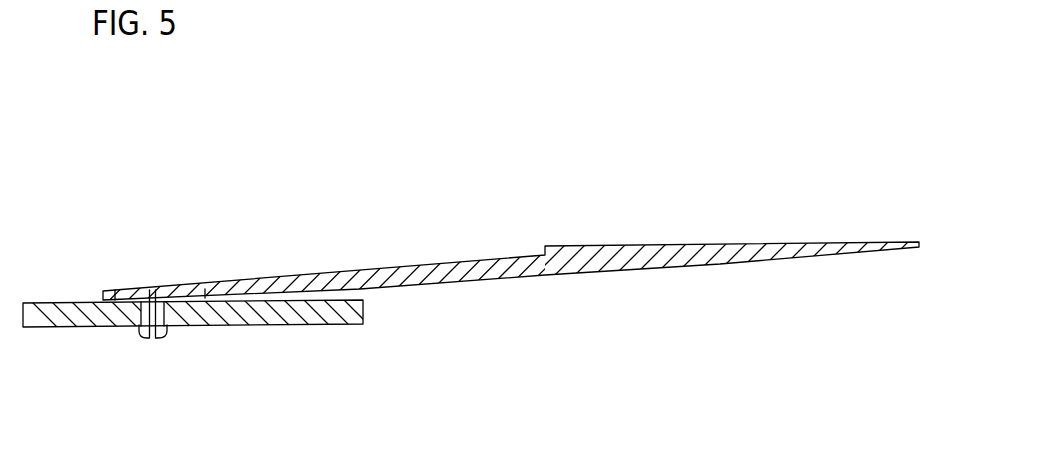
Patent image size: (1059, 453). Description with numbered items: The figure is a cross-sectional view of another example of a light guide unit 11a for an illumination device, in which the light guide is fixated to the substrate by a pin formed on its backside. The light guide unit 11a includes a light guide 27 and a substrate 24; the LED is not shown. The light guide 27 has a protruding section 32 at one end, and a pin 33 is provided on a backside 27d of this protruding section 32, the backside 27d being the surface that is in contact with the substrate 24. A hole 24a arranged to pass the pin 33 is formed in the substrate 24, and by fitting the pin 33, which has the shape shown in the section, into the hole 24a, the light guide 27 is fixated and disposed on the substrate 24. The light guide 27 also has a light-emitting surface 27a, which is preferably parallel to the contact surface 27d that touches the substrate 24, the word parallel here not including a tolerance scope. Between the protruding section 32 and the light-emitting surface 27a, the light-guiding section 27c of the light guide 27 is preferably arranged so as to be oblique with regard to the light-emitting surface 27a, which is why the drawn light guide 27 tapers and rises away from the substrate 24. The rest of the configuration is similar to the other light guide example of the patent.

The light guide unit 11a is at (793, 87).
The light guide 27 is at (582, 290).
The light-emitting surface 27a is at (847, 242).
The light-guiding section 27c is at (363, 268).
The backside 27d is at (115, 288).
The protruding section 32 is at (188, 290).
The substrate 24 is at (68, 328).
The hole 24a is at (157, 303).
The pin 33 is at (133, 330).